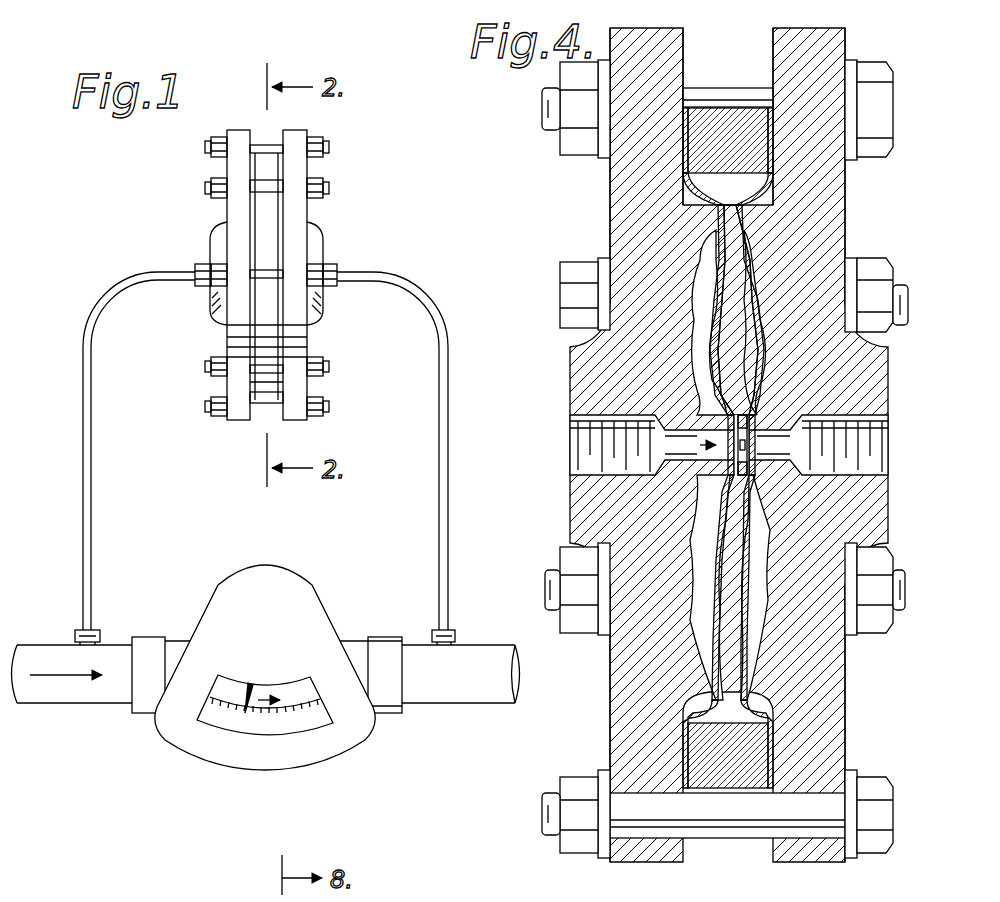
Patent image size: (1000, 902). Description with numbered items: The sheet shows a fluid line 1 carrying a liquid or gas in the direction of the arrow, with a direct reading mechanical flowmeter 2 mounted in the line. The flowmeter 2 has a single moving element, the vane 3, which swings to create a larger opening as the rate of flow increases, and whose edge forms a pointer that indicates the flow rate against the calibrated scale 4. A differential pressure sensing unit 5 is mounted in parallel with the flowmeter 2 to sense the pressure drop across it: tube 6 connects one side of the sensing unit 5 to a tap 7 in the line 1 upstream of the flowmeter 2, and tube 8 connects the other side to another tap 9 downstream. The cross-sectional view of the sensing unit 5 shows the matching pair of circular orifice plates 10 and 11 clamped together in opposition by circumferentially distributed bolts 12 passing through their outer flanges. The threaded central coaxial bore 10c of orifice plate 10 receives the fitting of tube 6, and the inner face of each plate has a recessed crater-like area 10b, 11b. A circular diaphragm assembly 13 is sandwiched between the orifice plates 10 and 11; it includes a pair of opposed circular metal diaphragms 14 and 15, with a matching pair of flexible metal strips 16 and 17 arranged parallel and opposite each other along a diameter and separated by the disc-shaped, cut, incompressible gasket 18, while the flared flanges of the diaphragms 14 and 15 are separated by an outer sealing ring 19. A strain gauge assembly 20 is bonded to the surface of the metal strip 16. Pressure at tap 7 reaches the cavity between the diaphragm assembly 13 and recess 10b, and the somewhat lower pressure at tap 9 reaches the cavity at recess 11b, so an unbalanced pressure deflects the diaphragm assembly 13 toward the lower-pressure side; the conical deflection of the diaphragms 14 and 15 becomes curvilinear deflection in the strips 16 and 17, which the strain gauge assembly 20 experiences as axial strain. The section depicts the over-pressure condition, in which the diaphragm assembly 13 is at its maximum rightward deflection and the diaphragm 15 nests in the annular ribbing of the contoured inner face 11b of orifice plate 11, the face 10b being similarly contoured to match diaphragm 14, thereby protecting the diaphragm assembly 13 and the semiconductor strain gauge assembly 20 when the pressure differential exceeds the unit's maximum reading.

In FIG. 1, the fluid line 1 is at (66, 695).
In FIG. 1, the flowmeter 2 is at (207, 602).
In FIG. 1, the vane 3 is at (249, 684).
In FIG. 1, the calibrated scale 4 is at (235, 708).
In FIG. 1, the differential pressure sensing unit 5 is at (338, 231).
In FIG. 4, the differential pressure sensing unit 5 is at (596, 212).
In FIG. 1, the tube 6 is at (83, 406).
In FIG. 1, the tap 7 is at (75, 640).
In FIG. 1, the tube 8 is at (433, 339).
In FIG. 1, the tap 9 is at (433, 640).
In FIG. 1, the orifice plate 10 is at (233, 215).
In FIG. 4, the orifice plate 10 is at (570, 343).
In FIG. 4, the recessed crater-like area 10b is at (701, 415).
In FIG. 4, the threaded central coaxial bore 10c is at (583, 462).
In FIG. 1, the orifice plate 11 is at (297, 343).
In FIG. 4, the orifice plate 11 is at (823, 633).
In FIG. 4, the recessed crater-like area 11b is at (764, 343).
In FIG. 1, the bolts 12 is at (265, 412).
In FIG. 4, the diaphragm assembly 13 is at (704, 505).
In FIG. 4, the diaphragm 14 is at (712, 350).
In FIG. 4, the diaphragm 15 is at (756, 312).
In FIG. 4, the flexible metal strip 16 is at (731, 468).
In FIG. 4, the flexible metal strip 17 is at (752, 468).
In FIG. 4, the gasket 18 is at (735, 667).
In FIG. 4, the outer sealing ring 19 is at (745, 722).
In FIG. 4, the strain gauge assembly 20 is at (775, 322).